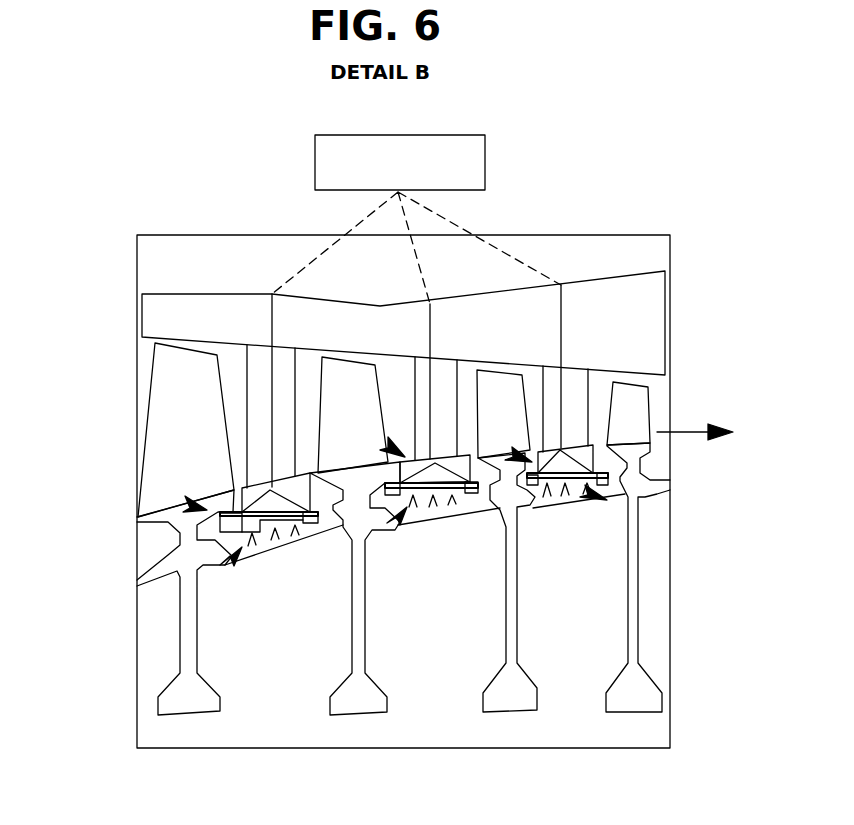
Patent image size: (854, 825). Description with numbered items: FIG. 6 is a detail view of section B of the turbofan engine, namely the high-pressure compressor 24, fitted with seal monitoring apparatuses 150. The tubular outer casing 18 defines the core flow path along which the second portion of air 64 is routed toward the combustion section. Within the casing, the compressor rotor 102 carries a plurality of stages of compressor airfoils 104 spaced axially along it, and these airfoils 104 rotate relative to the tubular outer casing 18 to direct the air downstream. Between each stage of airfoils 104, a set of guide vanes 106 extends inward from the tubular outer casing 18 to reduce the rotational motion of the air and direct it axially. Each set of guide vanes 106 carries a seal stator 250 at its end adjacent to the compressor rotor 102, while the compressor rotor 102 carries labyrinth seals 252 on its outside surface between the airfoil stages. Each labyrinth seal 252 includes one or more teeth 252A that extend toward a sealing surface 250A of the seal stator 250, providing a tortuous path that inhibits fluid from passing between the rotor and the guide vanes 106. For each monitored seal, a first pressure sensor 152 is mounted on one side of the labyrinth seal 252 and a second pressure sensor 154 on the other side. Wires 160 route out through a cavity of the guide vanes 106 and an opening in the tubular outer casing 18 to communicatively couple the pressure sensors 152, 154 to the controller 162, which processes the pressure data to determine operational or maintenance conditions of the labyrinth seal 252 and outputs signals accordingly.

The tubular outer casing 18 is at (637, 288).
The high-pressure compressor 24 is at (100, 310).
The second portion of air 64 is at (692, 433).
The compressor rotor 102 is at (185, 636).
The compressor airfoils 104 is at (163, 406).
The guide vanes 106 is at (260, 362).
The seal monitoring apparatus 150 is at (186, 500).
The first pressure sensor 152 is at (220, 513).
The second pressure sensor 154 is at (308, 512).
The wires 160 is at (395, 318).
The controller 162 is at (487, 169).
The seal stator 250 is at (243, 560).
The sealing surface 250A is at (262, 520).
The labyrinth seals 252 is at (230, 550).
The teeth 252A is at (276, 533).